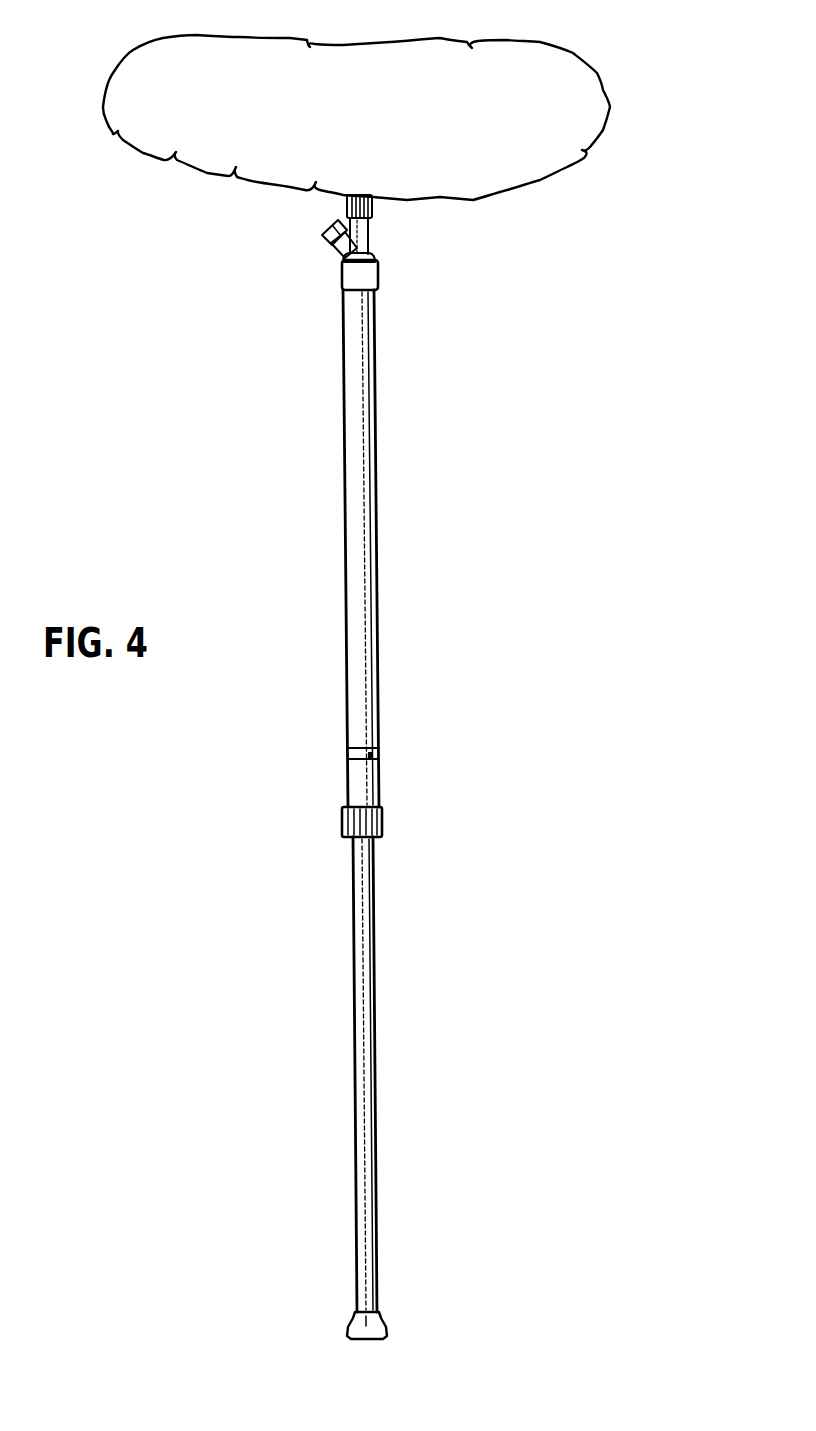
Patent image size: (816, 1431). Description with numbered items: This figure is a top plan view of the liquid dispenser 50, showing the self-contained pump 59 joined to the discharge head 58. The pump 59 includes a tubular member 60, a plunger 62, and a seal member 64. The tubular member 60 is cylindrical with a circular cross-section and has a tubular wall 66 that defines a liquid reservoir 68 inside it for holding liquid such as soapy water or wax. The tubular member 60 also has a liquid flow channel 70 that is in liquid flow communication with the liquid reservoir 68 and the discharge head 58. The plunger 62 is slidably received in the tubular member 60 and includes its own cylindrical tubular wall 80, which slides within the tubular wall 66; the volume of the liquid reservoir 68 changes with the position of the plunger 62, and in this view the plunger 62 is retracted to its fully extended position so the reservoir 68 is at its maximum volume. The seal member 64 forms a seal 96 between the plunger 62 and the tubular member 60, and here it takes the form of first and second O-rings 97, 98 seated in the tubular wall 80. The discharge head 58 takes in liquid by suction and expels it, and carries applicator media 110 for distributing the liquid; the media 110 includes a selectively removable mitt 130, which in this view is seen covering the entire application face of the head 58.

The liquid dispenser 50 is at (652, 45).
The discharge head 58 is at (80, 28).
The self-contained pump 59 is at (250, 584).
The tubular member 60 is at (376, 601).
The plunger 62 is at (374, 968).
The seal member 64 is at (352, 752).
The tubular wall 66 is at (377, 418).
The liquid reservoir 68 is at (346, 467).
The liquid flow channel 70 is at (372, 312).
The tubular wall 80 is at (379, 1185).
The seal 96 is at (379, 750).
The first O-ring 97 is at (366, 747).
The second O-ring 98 is at (379, 769).
The applicator media 110 is at (541, 36).
The mitt 130 is at (373, 129).